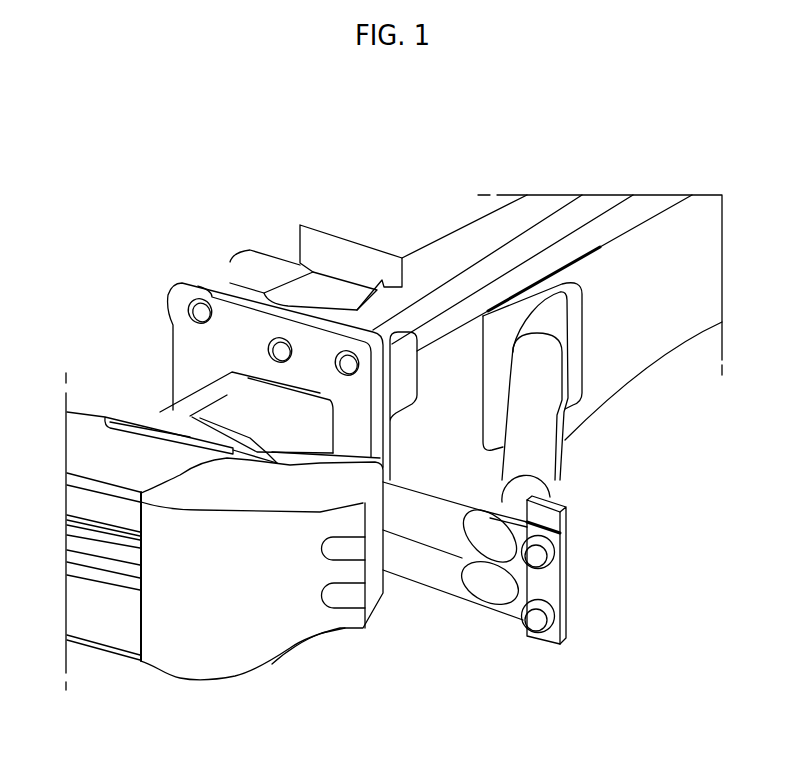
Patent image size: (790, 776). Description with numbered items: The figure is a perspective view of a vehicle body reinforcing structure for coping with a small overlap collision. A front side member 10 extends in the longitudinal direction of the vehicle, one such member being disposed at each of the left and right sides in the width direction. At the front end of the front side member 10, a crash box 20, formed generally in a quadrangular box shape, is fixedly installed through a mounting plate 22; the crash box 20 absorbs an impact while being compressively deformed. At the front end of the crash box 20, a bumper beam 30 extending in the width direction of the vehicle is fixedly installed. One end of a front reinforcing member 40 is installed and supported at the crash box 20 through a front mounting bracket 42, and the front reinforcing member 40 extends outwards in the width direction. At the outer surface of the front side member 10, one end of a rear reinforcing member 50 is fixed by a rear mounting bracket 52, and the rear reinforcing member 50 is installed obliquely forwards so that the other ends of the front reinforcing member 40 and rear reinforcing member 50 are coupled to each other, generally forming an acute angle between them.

The front side member 10 is at (665, 335).
The crash box 20 is at (112, 403).
The mounting plate 22 is at (181, 283).
The bumper beam 30 is at (107, 638).
The front reinforcing member 40 is at (428, 614).
The front mounting bracket 42 is at (228, 402).
The rear reinforcing member 50 is at (580, 486).
The rear mounting bracket 52 is at (490, 343).